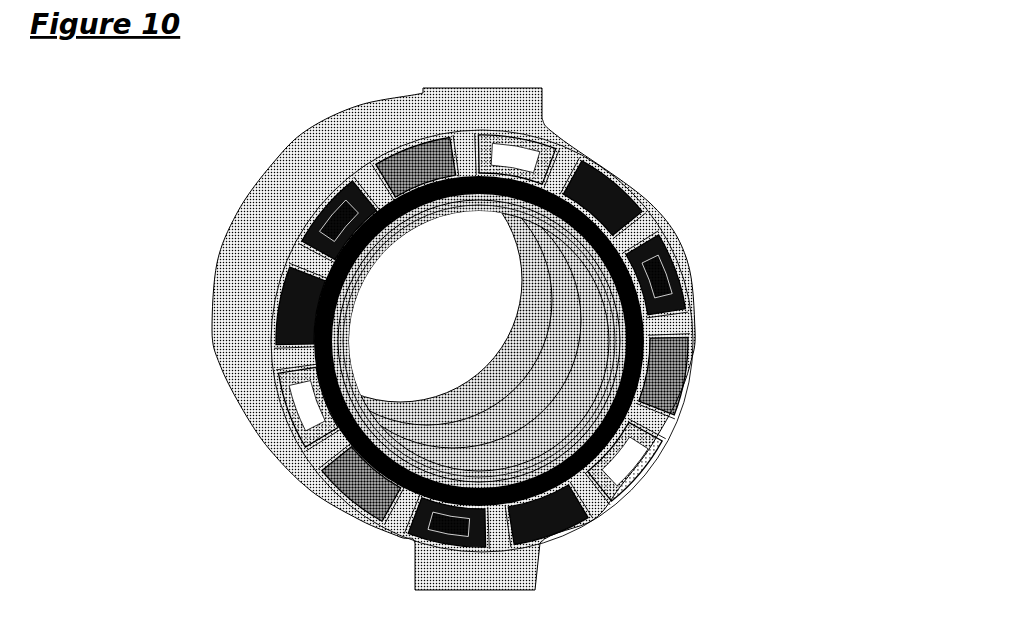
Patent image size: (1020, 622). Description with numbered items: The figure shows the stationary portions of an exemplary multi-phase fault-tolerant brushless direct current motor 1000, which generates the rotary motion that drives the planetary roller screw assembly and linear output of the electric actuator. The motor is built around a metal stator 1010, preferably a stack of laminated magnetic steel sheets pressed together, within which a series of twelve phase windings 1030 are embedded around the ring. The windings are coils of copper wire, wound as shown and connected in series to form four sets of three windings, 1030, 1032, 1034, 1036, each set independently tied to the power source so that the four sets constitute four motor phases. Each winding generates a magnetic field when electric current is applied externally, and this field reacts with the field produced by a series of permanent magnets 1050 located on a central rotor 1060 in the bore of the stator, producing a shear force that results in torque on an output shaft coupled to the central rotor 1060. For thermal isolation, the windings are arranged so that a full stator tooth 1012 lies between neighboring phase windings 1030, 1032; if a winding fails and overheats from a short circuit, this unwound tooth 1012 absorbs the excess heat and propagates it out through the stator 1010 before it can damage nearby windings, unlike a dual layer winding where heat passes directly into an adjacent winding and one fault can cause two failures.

The motor 1000 is at (770, 200).
The stator 1010 is at (618, 180).
The stator tooth 1012 is at (300, 263).
The phase windings 1030 is at (687, 287).
The phase windings 1032 is at (645, 215).
The phase windings 1034 is at (623, 460).
The phase windings 1036 is at (695, 374).
The permanent magnets 1050 is at (490, 186).
The central rotor 1060 is at (518, 213).